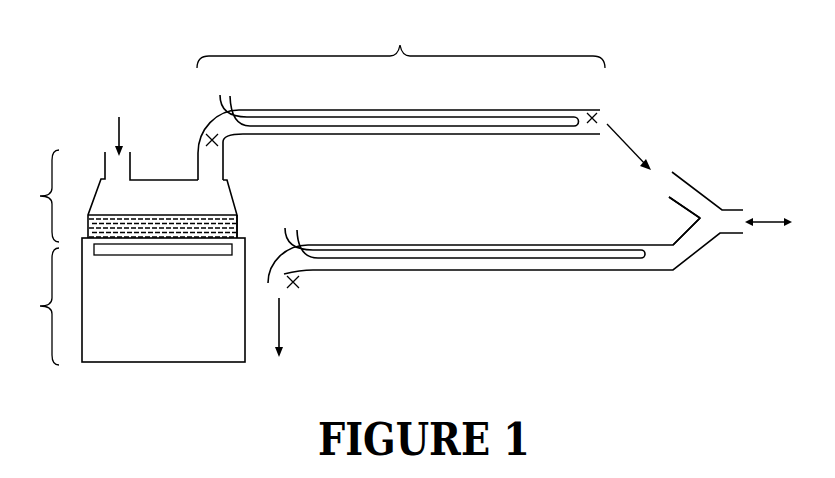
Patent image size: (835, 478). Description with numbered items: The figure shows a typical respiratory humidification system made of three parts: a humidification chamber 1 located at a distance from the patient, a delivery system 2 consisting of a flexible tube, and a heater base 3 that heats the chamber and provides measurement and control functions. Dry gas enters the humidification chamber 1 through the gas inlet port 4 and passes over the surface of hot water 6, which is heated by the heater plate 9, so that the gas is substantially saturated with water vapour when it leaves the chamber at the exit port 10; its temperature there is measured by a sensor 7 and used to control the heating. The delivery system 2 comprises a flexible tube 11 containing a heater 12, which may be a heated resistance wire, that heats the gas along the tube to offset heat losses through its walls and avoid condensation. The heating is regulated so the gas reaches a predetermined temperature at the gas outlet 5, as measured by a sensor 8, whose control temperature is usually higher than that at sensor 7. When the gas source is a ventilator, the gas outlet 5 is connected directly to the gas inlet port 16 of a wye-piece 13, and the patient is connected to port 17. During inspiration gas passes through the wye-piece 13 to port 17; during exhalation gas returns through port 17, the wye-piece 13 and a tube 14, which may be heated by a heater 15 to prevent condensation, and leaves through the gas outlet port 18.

The humidification chamber 1 is at (37, 196).
The delivery system 2 is at (401, 44).
The heater base 3 is at (131, 301).
The gas inlet port 4 is at (113, 170).
The gas outlet 5 is at (603, 118).
The hot water 6 is at (203, 223).
The sensor 7 is at (208, 137).
The sensor 8 is at (592, 110).
The heater plate 9 is at (240, 228).
The exit port 10 is at (210, 162).
The flexible tube 11 is at (397, 135).
The heater 12 is at (502, 127).
The wye-piece 13 is at (713, 200).
The tube 14 is at (418, 270).
The heater 15 is at (542, 258).
The gas inlet port 16 is at (678, 178).
The port 17 is at (748, 210).
The gas outlet port 18 is at (293, 282).